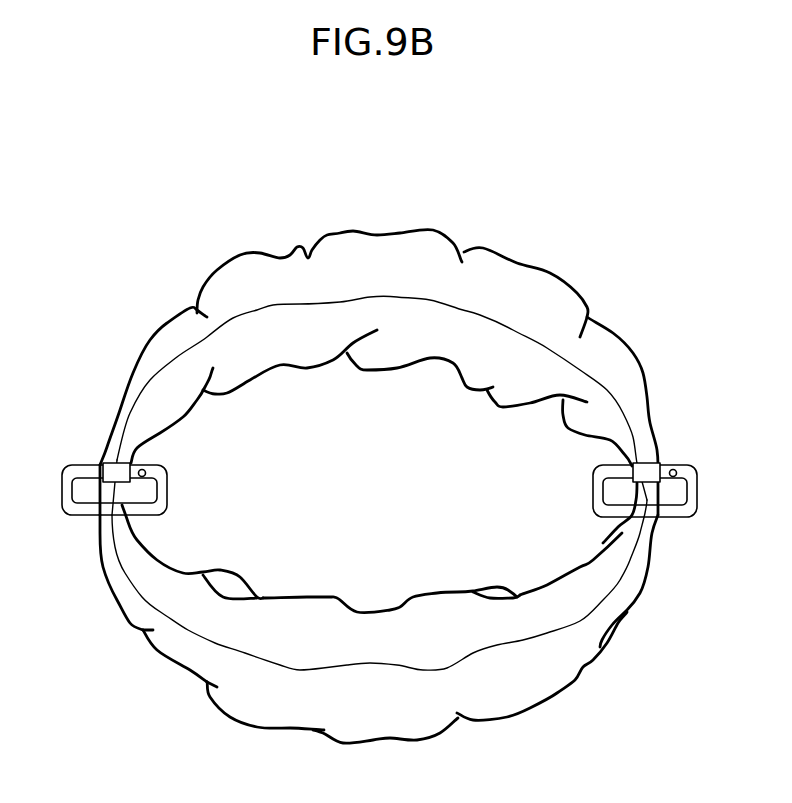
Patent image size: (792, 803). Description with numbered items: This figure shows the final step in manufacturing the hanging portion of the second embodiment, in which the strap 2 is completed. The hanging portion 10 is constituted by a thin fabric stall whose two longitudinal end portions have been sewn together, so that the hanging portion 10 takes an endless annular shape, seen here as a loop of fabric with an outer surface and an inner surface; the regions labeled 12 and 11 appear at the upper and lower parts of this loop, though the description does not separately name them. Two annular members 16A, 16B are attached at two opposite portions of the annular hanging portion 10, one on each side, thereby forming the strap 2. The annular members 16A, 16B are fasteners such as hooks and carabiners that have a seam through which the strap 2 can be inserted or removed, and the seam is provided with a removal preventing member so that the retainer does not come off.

The strap 2 is at (388, 434).
The hanging portion 10 is at (584, 300).
The inner layer 11 is at (385, 347).
The upper portion 12 is at (384, 262).
The annular member 16A is at (672, 465).
The annular member 16B is at (88, 466).